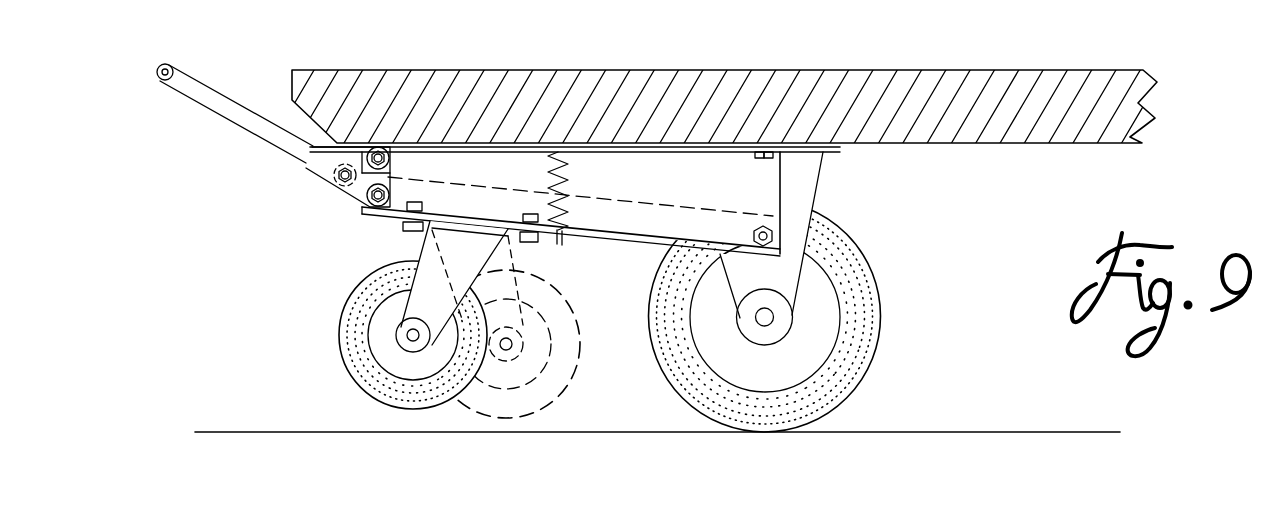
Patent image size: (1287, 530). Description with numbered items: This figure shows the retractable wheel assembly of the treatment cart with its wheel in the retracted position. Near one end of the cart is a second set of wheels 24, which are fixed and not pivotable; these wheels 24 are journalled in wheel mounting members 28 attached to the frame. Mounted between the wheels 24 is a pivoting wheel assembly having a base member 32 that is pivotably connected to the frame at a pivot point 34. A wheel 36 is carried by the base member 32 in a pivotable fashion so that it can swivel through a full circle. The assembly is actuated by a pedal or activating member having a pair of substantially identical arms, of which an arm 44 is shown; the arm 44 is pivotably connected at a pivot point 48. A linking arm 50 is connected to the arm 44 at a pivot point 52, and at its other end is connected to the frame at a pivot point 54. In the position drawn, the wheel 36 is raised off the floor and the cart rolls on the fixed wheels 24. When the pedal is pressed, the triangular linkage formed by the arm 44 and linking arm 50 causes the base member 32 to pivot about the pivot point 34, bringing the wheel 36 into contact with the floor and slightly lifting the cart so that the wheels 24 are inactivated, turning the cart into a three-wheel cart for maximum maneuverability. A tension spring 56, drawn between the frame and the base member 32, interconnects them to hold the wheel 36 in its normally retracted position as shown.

The second set of wheels 24 is at (857, 328).
The wheel mounting member 28 is at (800, 180).
The base member 32 is at (625, 243).
The pivot point 34 is at (772, 236).
The wheel 36 is at (348, 340).
The arm 44 is at (230, 110).
The pivot point 48 is at (375, 209).
The linking arm 50 is at (389, 187).
The pivot point 52 is at (338, 187).
The pivot point 54 is at (386, 149).
The spring 56 is at (570, 182).